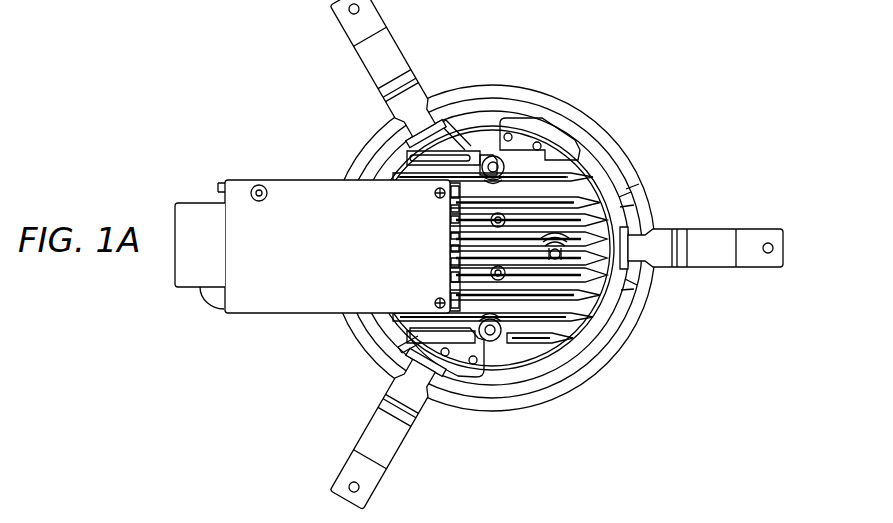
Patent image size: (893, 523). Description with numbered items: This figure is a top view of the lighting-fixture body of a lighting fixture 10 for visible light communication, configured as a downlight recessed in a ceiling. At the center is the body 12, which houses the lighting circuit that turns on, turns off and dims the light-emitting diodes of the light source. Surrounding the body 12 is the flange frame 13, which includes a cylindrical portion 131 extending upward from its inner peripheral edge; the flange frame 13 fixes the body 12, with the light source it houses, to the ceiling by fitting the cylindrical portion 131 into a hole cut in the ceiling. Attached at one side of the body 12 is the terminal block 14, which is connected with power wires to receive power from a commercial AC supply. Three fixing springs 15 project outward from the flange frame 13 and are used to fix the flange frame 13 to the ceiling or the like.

The lighting fixture 10 is at (178, 28).
The body 12 is at (547, 177).
The flange frame 13 is at (625, 158).
The cylindrical portion 131 is at (634, 200).
The terminal block 14 is at (323, 193).
The fixing springs 15 is at (717, 230).